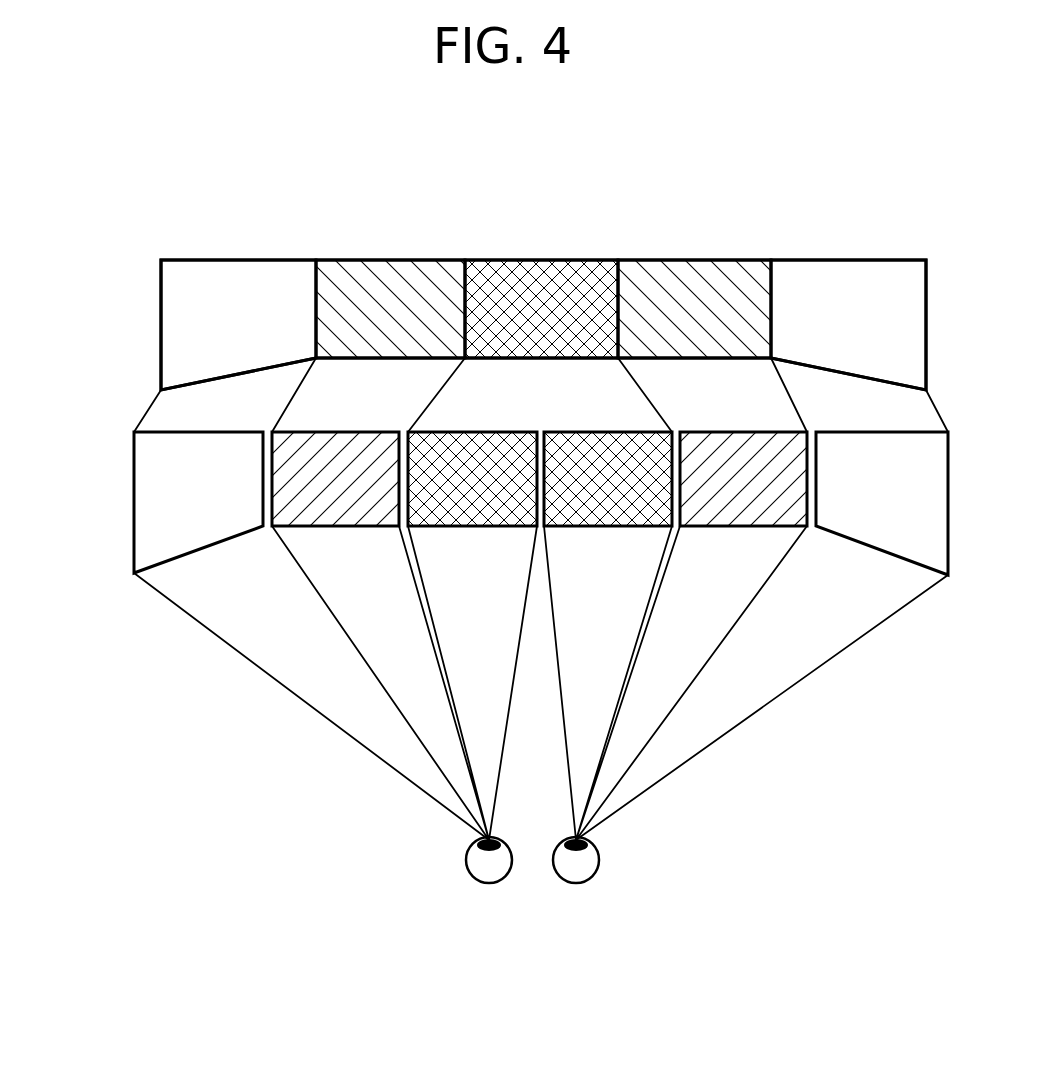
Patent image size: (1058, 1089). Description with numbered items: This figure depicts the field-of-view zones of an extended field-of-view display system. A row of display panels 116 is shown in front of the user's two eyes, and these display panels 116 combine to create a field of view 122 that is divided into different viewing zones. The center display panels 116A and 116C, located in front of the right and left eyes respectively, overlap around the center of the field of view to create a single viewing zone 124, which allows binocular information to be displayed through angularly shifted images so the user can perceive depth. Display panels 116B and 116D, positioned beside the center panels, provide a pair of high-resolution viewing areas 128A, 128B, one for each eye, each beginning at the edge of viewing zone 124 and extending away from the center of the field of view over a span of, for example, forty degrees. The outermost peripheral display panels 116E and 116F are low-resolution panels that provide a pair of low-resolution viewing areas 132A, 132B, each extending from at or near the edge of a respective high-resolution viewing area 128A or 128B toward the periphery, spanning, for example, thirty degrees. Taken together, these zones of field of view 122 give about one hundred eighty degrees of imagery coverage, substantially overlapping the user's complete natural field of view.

The field of view 122 is at (118, 318).
The low-resolution viewing area 132A is at (240, 260).
The high-resolution viewing area 128A is at (397, 260).
The viewing zone 124 is at (536, 260).
The high-resolution viewing area 128B is at (683, 260).
The low-resolution viewing area 132B is at (858, 260).
The display panel 116 is at (117, 517).
The display panel 116F is at (163, 432).
The display panel 116D is at (313, 432).
The display panel 116C is at (457, 432).
The display panel 116A is at (618, 432).
The display panel 116B is at (772, 432).
The display panel 116E is at (913, 432).